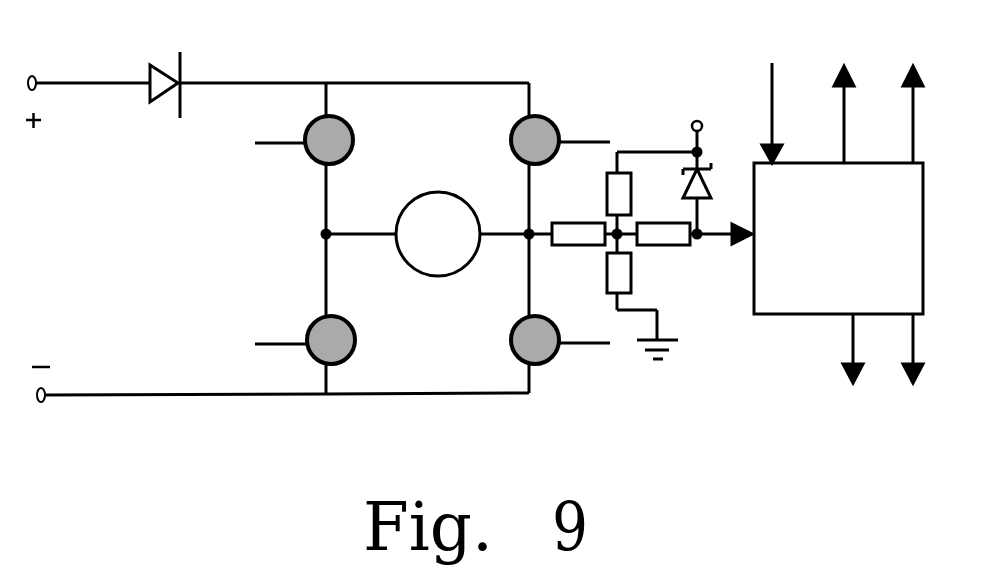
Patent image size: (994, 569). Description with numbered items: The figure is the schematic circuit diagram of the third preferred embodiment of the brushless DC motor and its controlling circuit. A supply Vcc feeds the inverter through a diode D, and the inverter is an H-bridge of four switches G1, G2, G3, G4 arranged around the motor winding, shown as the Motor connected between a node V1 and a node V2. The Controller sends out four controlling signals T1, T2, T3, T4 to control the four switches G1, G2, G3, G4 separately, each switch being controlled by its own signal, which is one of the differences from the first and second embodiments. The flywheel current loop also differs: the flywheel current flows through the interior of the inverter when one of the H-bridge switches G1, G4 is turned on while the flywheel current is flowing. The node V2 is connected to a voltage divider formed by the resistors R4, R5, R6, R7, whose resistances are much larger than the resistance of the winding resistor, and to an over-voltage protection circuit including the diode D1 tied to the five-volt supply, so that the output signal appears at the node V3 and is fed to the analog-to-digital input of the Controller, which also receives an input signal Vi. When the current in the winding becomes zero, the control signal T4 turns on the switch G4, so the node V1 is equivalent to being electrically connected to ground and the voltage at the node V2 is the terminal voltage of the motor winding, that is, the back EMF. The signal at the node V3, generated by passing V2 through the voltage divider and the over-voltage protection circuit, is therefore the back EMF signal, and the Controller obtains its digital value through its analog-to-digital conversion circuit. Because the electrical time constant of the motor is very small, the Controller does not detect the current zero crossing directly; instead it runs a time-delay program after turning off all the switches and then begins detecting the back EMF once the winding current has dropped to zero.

The diode D is at (146, 83).
The switch G1 is at (346, 140).
The switch G2 is at (519, 140).
The switch G3 is at (522, 340).
The switch G4 is at (346, 340).
The controlling signal T1 is at (554, 114).
The controlling signal T2 is at (741, 114).
The controlling signal T3 is at (711, 348).
The controlling signal T4 is at (589, 348).
The motor Motor is at (439, 234).
The node of V1 is at (311, 235).
The node of V2 is at (516, 222).
The node of V3 is at (736, 248).
The resistor R4 is at (594, 247).
The resistor R5 is at (685, 247).
The resistor R6 is at (637, 202).
The resistor R7 is at (642, 306).
The zener diode D1 is at (684, 168).
The input voltage Vi is at (763, 113).
The supply voltage Vcc is at (50, 239).
The controller Controller is at (838, 238).